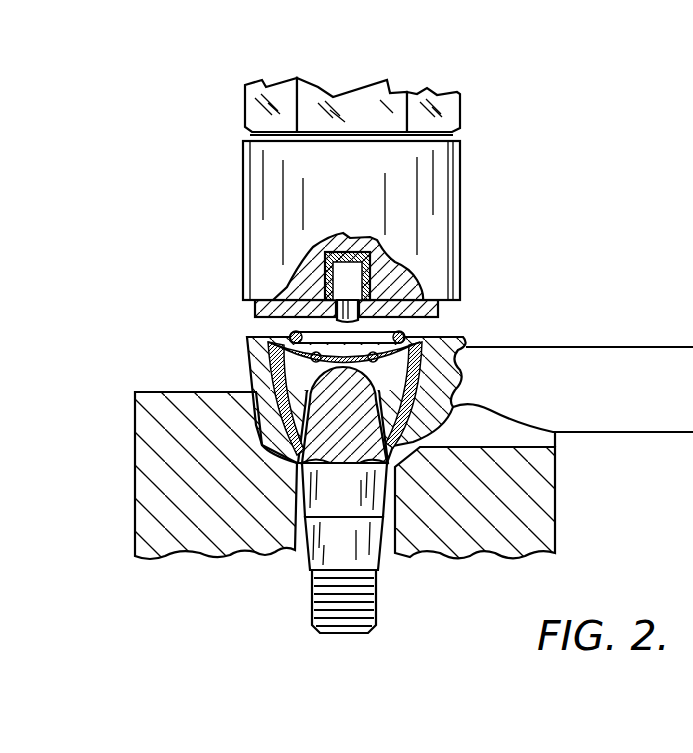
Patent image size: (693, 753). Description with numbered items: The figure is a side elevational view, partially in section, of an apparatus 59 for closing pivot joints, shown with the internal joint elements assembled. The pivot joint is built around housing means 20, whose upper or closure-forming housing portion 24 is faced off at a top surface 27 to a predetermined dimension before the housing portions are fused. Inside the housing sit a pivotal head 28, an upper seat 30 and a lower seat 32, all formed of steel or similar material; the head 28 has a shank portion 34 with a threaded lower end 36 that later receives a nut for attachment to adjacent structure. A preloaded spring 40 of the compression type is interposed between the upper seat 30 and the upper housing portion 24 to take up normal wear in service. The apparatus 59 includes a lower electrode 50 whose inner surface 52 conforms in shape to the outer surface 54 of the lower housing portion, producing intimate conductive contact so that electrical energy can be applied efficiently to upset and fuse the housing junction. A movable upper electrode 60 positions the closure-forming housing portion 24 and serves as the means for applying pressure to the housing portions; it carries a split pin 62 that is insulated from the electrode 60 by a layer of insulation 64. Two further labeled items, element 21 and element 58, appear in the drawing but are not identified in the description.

The housing means 20 is at (369, 386).
The supporting arm 21 is at (647, 353).
The closure-forming housing portion 24 is at (258, 316).
The top surface 27 is at (288, 333).
The pivotal head 28 is at (405, 412).
The upper seat 30 is at (256, 360).
The lower seat 32 is at (300, 437).
The shank portion 34 is at (328, 543).
The threaded lower end 36 is at (327, 610).
The preloaded spring 40 is at (444, 328).
The lower electrode 50 is at (527, 491).
The inner surface 52 is at (266, 438).
The outer surface 54 is at (136, 552).
The bottom surface 58 is at (447, 557).
The apparatus 59 is at (470, 100).
The upper electrode 60 is at (433, 182).
The split pin 62 is at (418, 292).
The layer of insulation 64 is at (323, 262).